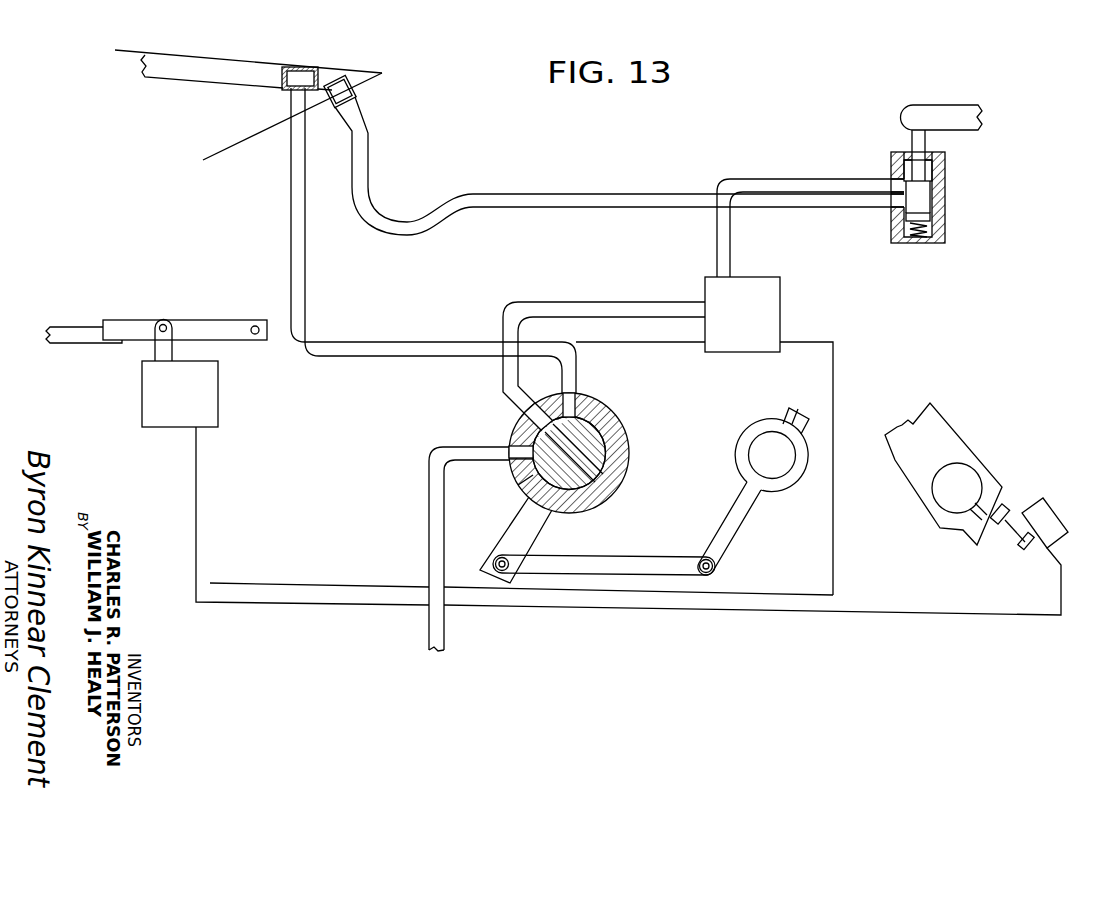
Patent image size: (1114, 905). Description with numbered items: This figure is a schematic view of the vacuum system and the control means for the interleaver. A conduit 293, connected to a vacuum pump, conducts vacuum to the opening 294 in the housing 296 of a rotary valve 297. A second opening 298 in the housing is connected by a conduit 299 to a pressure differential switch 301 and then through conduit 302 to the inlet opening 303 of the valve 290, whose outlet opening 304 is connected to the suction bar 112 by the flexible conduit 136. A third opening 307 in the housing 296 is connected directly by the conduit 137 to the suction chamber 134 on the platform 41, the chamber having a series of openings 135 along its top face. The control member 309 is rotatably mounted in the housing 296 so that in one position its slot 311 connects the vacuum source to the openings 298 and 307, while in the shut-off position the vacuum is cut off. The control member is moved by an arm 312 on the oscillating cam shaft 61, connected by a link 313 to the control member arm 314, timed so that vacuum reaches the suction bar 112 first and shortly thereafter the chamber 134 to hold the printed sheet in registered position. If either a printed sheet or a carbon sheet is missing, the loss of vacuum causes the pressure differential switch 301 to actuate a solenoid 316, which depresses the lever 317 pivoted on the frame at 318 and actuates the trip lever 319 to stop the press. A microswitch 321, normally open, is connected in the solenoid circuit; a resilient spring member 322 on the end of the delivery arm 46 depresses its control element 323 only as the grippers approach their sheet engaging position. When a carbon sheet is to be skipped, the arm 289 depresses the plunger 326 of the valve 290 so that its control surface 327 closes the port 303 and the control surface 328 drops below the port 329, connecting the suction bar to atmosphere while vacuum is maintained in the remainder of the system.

The platform 41 is at (184, 68).
The suction chamber 134 is at (288, 67).
The openings 135 is at (300, 67).
The suction bar 112 is at (356, 88).
The flexible conduit 136 is at (500, 200).
The conduit 137 is at (299, 222).
The arm 289 is at (938, 113).
The plunger 326 is at (917, 142).
The inlet opening 303 is at (898, 185).
The control surface 327 is at (945, 168).
The outlet opening 304 is at (898, 203).
The control surface 328 is at (931, 218).
The port 329 is at (900, 224).
The valve 290 is at (945, 242).
The conduit 302 is at (722, 233).
The pressure differential switch 301 is at (765, 304).
The conduit 299 is at (558, 317).
The trip lever 319 is at (58, 334).
The lever 317 is at (182, 328).
The pivot 318 is at (255, 326).
The solenoid 316 is at (202, 398).
The conduit 293 is at (437, 530).
The rotary valve 297 is at (619, 414).
The second opening 298 is at (526, 416).
The third opening 307 is at (573, 406).
The opening 294 is at (517, 445).
The slot 311 is at (520, 458).
The housing 296 is at (527, 477).
The control member 309 is at (608, 453).
The control member arm 314 is at (525, 534).
The link 313 is at (613, 567).
The arm 312 is at (728, 532).
The oscillating cam shaft 61 is at (761, 448).
The delivery arm 46 is at (943, 433).
The resilient spring member 322 is at (1012, 537).
The control element 323 is at (1030, 551).
The microswitch 321 is at (1043, 513).